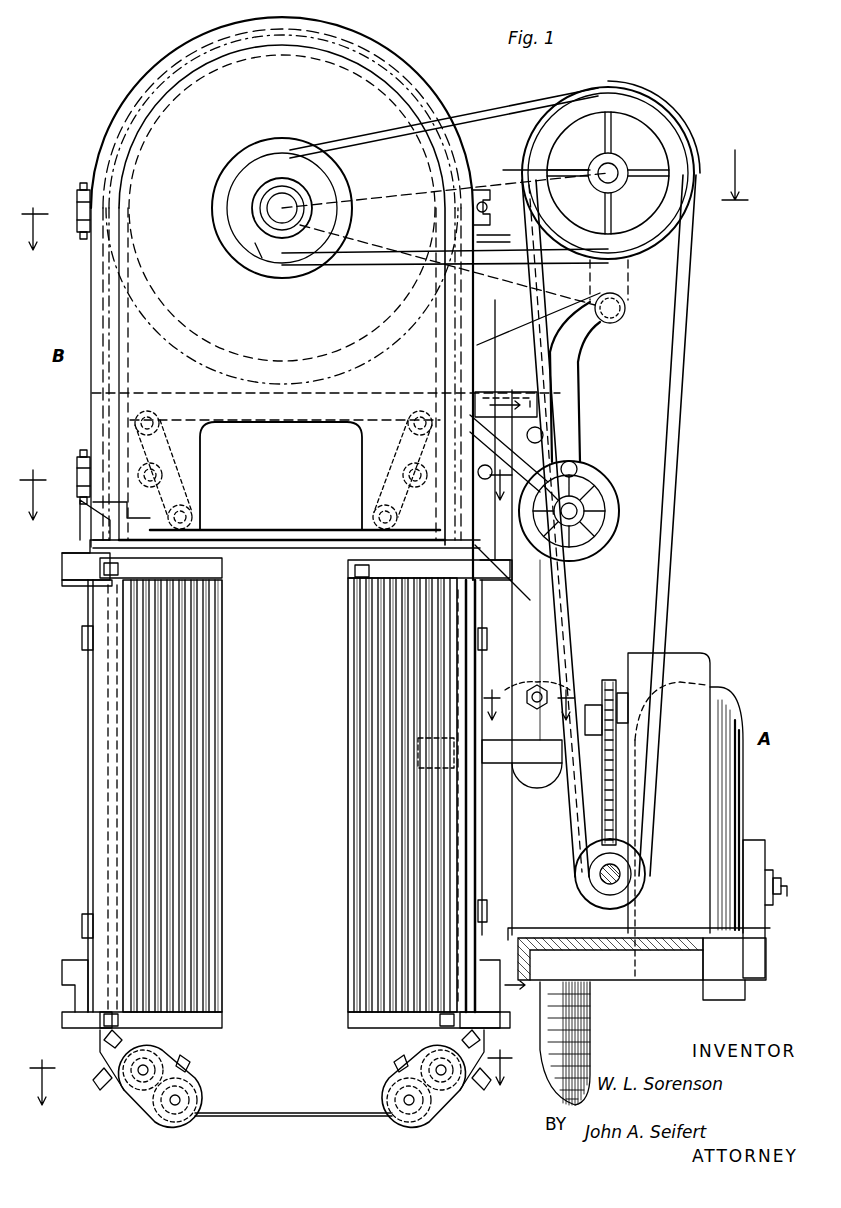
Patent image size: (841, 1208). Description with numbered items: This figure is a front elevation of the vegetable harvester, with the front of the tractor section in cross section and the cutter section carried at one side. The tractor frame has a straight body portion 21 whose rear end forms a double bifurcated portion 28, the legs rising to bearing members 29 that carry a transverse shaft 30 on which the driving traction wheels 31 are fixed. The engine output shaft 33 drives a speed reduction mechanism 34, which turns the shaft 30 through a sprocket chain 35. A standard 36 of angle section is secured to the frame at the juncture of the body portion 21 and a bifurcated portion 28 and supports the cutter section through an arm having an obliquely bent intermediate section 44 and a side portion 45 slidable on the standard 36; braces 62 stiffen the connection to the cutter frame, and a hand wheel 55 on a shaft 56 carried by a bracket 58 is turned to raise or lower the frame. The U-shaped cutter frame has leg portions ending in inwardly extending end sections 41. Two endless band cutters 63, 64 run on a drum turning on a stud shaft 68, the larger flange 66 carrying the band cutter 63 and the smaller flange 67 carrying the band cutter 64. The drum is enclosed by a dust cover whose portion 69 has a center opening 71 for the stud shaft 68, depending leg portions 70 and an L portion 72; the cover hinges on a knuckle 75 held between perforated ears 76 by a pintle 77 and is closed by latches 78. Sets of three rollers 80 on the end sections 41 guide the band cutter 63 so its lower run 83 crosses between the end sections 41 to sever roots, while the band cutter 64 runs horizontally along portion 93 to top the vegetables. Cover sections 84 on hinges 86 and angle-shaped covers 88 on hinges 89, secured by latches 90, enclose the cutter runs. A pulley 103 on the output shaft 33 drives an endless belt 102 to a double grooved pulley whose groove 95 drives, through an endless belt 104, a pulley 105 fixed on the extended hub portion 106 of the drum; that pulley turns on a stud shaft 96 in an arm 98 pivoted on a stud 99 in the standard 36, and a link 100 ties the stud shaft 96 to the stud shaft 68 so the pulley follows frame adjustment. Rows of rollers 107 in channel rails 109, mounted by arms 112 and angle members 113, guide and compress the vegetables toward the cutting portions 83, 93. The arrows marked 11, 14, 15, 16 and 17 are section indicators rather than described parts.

The section line 11 is at (535, 709).
The section line arrows 14 is at (393, 207).
The section line arrows 15 is at (266, 502).
The section line arrows 16 is at (277, 1081).
The section line arrows 17 is at (510, 696).
The frame body portion 21 is at (672, 985).
The bifurcated portion 28 is at (770, 975).
The bearing members 29 is at (760, 858).
The shaft 30 is at (790, 905).
The driving traction wheels 31 is at (740, 787).
The output shaft 33 is at (622, 876).
The speed reduction mechanism 34 is at (715, 662).
The sprocket chain 35 is at (606, 678).
The standard 36 is at (590, 630).
The inwardly extending end sections 41 is at (140, 1115).
The intermediate section 44 is at (482, 340).
The side portion 45 is at (543, 790).
The hand wheel 55 is at (585, 500).
The shaft 56 is at (581, 501).
The bracket 58 is at (540, 575).
The braces 62 is at (478, 398).
The band cutter 63 is at (92, 393).
The band cutter 64 is at (180, 356).
The flange 66 is at (372, 340).
The flange 67 is at (190, 393).
The stud shaft 68 is at (268, 196).
The cover portion 69 is at (118, 297).
The cover leg portions 70 is at (185, 465).
The center opening 71 is at (280, 280).
The L portion 72 is at (91, 332).
The knuckle 75 is at (77, 205).
The perforated ears 76 is at (80, 240).
The pintle 77 is at (83, 183).
The latches 78 is at (487, 220).
The rollers 80 is at (200, 1092).
The cutting portion 83 is at (290, 1118).
The cover section 84 is at (108, 1048).
The hinges 86 is at (82, 640).
The cover 88 is at (170, 1048).
The hinge 89 is at (128, 1095).
The latch 90 is at (192, 1063).
The horizontal path of travel 93 is at (278, 540).
The pulley groove 95 is at (675, 140).
The stud shaft 96 is at (614, 166).
The arm 98 is at (625, 290).
The stud 99 is at (620, 322).
The link 100 is at (482, 175).
The endless belt 102 is at (676, 578).
The pulley 103 is at (638, 862).
The endless belt 104 is at (482, 108).
The pulley 105 is at (256, 247).
The hub portion 106 is at (252, 215).
The rollers 107 is at (348, 795).
The channel rails 109 is at (222, 572).
The arms 112 is at (78, 560).
The angle members 113 is at (70, 590).